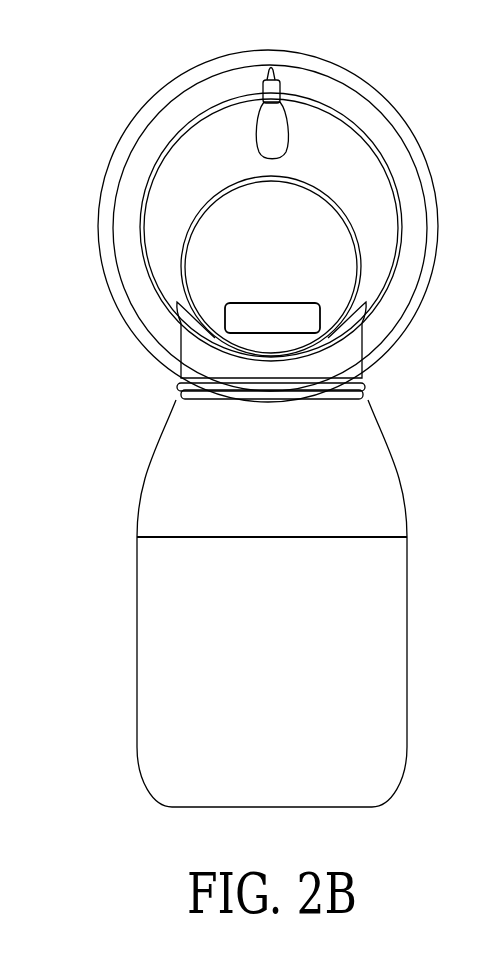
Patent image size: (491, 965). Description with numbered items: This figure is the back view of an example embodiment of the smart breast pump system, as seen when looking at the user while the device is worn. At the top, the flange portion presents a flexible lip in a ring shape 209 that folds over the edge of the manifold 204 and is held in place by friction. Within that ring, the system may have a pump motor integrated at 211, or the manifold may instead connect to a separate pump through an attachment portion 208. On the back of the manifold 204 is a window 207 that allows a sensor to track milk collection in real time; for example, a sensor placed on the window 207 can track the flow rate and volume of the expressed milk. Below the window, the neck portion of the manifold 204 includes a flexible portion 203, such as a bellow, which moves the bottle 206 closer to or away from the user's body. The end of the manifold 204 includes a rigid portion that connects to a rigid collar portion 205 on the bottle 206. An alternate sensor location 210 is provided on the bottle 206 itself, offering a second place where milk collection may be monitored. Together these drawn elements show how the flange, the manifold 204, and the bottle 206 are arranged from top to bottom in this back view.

The flexible portion 203 is at (183, 388).
The manifold 204 is at (167, 478).
The rigid collar portion 205 is at (137, 537).
The bottle 206 is at (158, 700).
The window 207 is at (260, 303).
The attachment portion 208 is at (258, 122).
The flexible lip in a ring shape 209 is at (147, 170).
The alternate sensor location 210 is at (257, 560).
The integrated pump motor location 211 is at (293, 225).